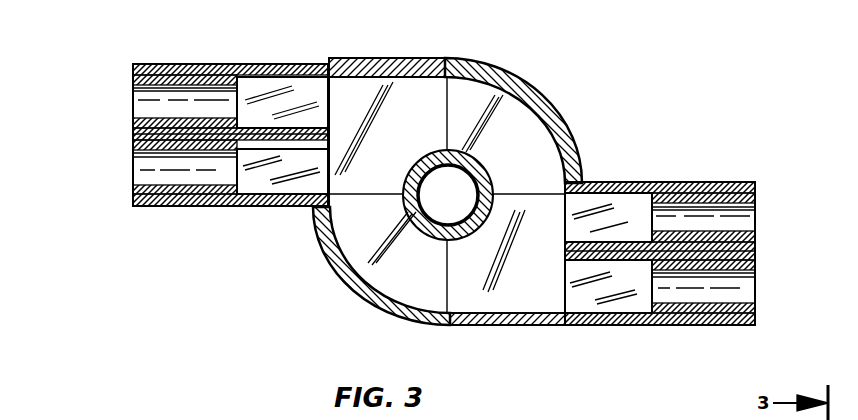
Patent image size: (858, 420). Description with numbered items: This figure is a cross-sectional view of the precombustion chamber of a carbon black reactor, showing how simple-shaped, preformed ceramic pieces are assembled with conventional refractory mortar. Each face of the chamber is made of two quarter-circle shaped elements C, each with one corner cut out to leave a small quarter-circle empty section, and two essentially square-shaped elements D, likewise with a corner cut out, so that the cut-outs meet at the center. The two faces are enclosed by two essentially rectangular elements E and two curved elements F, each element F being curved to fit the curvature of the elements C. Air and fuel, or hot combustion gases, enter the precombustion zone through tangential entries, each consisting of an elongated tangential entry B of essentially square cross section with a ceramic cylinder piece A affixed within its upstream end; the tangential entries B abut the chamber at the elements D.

The cylinder piece A is at (186, 72).
The tangential entry B is at (264, 62).
The quarter-circle face element C is at (521, 148).
The square face element D is at (411, 129).
The rectangular enclosing element E is at (417, 58).
The curved enclosing element F is at (557, 110).